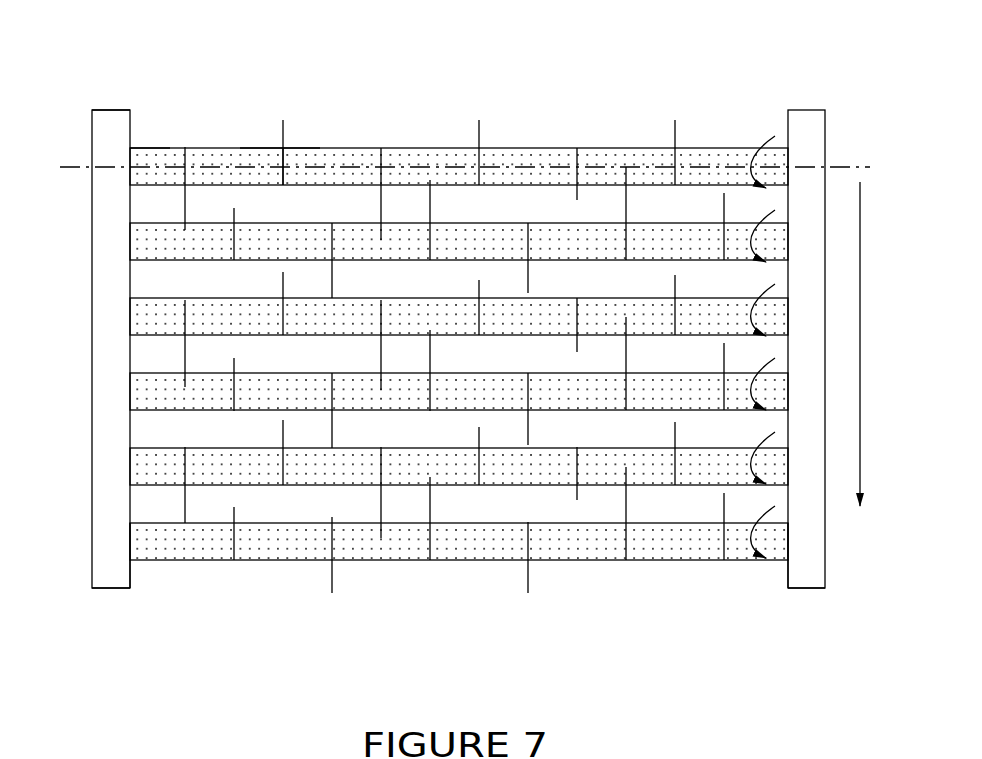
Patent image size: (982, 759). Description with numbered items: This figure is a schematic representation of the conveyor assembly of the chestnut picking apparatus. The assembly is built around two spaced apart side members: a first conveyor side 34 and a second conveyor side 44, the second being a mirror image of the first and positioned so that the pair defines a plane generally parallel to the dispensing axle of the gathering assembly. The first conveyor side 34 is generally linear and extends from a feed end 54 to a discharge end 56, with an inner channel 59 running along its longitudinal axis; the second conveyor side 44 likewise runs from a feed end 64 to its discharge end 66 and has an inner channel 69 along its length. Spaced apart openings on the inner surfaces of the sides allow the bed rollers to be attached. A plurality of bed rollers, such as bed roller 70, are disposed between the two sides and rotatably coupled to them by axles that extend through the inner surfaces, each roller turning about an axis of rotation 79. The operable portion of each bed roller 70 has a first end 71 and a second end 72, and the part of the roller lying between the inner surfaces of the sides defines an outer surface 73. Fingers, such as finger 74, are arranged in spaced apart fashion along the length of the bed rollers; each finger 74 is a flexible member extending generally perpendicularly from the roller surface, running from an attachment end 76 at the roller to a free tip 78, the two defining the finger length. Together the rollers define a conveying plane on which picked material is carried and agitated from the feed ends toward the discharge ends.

The first conveyor side 34 is at (76, 274).
The second conveyor side 44 is at (842, 291).
The feed end 54 is at (107, 98).
The discharge end 56 is at (108, 600).
The inner channel 59 is at (104, 550).
The feed end 64 is at (814, 98).
The second end of second header 66 is at (807, 602).
The inner channel 69 is at (810, 554).
The bed roller 70 is at (432, 135).
The first end 71 is at (132, 146).
The second end 72 is at (787, 146).
The outer surface 73 is at (522, 165).
The finger 74 is at (270, 135).
The attachment end 76 is at (284, 148).
The tip 78 is at (283, 120).
The axis of rotation 79 is at (846, 152).